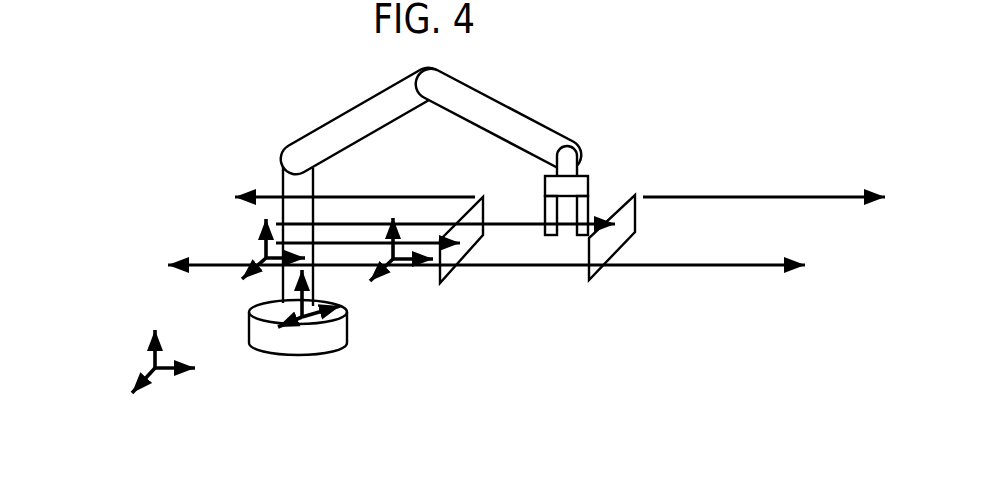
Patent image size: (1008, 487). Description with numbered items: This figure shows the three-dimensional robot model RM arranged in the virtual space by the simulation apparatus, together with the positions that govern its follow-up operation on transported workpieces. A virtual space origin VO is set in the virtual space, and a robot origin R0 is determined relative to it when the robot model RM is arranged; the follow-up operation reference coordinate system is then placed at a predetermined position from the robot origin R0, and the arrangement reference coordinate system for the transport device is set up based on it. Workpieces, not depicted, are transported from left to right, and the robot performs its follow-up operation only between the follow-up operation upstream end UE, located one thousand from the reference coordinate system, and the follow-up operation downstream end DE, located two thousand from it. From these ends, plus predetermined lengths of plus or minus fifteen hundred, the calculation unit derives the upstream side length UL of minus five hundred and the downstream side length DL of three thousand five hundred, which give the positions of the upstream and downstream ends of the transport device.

The robot model RM is at (520, 90).
The follow-up operation downstream end DE is at (628, 217).
The follow-up operation upstream end UE is at (470, 243).
The downstream side length DL is at (740, 267).
The upstream side length UL is at (213, 268).
The virtual space origin VO is at (150, 364).
The robot origin R0 is at (302, 318).